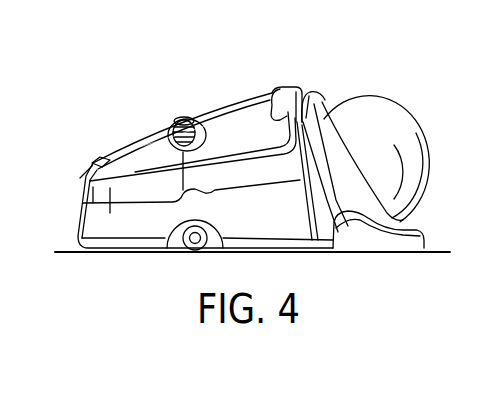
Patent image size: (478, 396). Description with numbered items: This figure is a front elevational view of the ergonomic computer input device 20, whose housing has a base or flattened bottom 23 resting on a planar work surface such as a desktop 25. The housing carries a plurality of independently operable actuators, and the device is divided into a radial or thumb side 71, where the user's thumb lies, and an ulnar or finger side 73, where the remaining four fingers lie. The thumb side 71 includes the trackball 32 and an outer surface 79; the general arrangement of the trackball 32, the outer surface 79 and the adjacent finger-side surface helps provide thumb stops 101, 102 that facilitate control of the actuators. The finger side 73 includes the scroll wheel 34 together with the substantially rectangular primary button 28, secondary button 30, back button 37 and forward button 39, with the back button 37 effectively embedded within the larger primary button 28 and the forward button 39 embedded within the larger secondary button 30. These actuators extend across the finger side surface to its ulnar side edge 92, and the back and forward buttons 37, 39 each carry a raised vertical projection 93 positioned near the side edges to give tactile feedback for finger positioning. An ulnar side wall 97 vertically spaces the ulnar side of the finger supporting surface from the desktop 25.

The computer input device 20 is at (118, 64).
The flattened bottom 23 is at (132, 252).
The desktop 25 is at (56, 253).
The primary button 28 is at (250, 123).
The secondary button 30 is at (140, 160).
The trackball 32 is at (392, 120).
The wheel 34 is at (170, 126).
The back button 37 is at (290, 88).
The forward button 39 is at (90, 164).
The thumb side 71 is at (384, 74).
The finger side 73 is at (215, 98).
The outer surface 79 is at (390, 253).
The ulnar side edge 92 is at (95, 160).
The raised vertical projection 93 is at (280, 92).
The ulnar side wall 97 is at (78, 213).
The thumb stop 101 is at (320, 97).
The thumb stop 102 is at (433, 203).